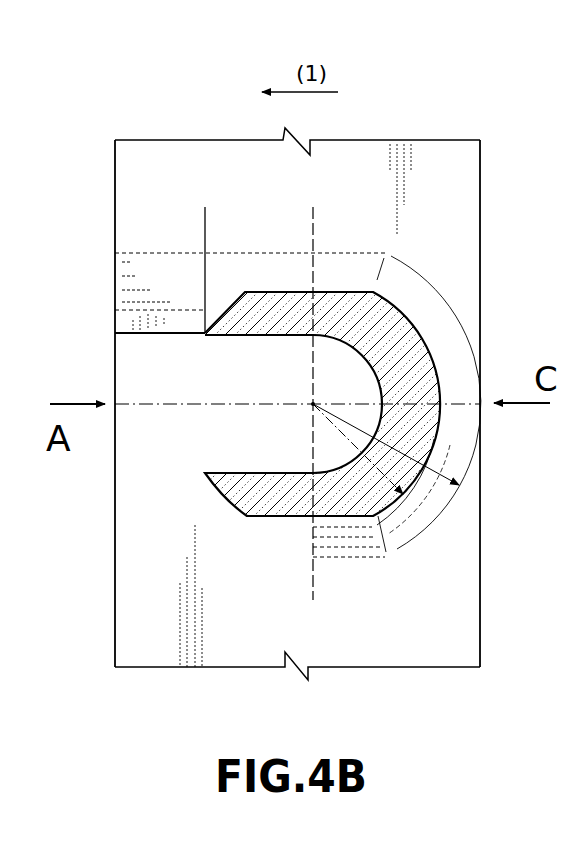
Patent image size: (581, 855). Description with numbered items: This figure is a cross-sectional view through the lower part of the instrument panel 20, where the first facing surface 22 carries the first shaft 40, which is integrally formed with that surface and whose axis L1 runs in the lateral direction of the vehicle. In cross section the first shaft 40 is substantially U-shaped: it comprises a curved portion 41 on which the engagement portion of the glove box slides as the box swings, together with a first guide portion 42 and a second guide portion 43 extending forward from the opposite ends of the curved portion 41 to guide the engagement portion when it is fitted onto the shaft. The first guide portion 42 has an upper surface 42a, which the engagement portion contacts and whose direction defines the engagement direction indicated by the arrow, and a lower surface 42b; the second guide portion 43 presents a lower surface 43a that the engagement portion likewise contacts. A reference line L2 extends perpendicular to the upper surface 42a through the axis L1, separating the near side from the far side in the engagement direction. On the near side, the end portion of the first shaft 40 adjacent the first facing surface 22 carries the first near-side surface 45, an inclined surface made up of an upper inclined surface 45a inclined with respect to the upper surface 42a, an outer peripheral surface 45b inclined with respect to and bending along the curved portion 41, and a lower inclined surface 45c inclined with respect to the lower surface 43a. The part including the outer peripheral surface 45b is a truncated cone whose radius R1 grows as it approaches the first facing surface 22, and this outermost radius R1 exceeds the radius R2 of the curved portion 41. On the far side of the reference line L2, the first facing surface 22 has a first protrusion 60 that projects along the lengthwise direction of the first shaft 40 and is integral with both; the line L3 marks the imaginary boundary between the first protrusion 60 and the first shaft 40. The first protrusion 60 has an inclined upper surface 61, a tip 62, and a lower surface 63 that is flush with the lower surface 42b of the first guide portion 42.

The instrument panel 20 is at (427, 128).
The first facing surface 22 is at (174, 160).
The first shaft 40 is at (410, 372).
The curved portion 41 is at (393, 351).
The first guide portion 42 is at (257, 317).
The upper surface 42a is at (273, 290).
The lower surface 42b is at (283, 338).
The second guide portion 43 is at (253, 493).
The lower surface 43a is at (285, 518).
The first near-side surface 45 is at (328, 396).
The upper inclined surface 45a is at (350, 270).
The outer peripheral surface 45b is at (440, 322).
The lower inclined surface 45c is at (350, 540).
The first protrusion 60 is at (131, 268).
The upper surface 61 is at (125, 280).
The tip 62 is at (125, 318).
The lower surface 63 is at (140, 333).
The axis L1 is at (313, 404).
The reference line L2 is at (313, 592).
The imaginary boundary line L3 is at (205, 222).
The radius R1 is at (480, 441).
The radius R2 is at (405, 500).